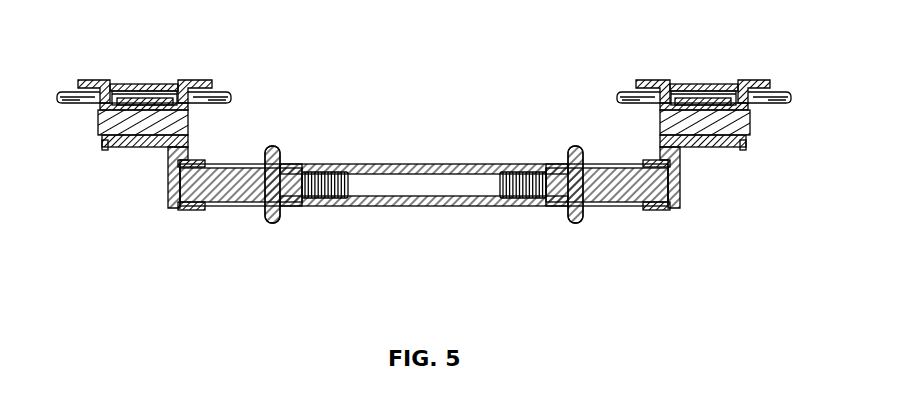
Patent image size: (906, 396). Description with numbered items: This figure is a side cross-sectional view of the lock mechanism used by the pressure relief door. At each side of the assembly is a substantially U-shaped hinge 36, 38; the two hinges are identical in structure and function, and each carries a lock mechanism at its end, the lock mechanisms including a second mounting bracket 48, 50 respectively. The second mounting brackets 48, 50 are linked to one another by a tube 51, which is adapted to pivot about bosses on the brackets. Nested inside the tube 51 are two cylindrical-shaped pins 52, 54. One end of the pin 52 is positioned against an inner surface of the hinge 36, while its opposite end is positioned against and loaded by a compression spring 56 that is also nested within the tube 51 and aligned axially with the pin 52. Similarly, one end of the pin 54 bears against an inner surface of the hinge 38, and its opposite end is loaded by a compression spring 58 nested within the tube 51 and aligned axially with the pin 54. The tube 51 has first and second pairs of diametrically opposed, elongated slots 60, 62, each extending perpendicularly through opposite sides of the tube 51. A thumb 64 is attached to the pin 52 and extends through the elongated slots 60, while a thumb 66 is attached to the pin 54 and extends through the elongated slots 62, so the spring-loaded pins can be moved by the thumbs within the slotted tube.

The hinge 36 is at (681, 175).
The hinge 38 is at (172, 155).
The second mounting bracket 48 is at (653, 80).
The second mounting bracket 50 is at (193, 82).
The tube 51 is at (448, 160).
The pin 52 is at (638, 188).
The pin 54 is at (222, 185).
The compression spring 56 is at (511, 197).
The compression spring 58 is at (318, 197).
The elongated slots 60 is at (562, 160).
The elongated slots 62 is at (266, 205).
The thumb 64 is at (568, 205).
The thumb 66 is at (274, 139).